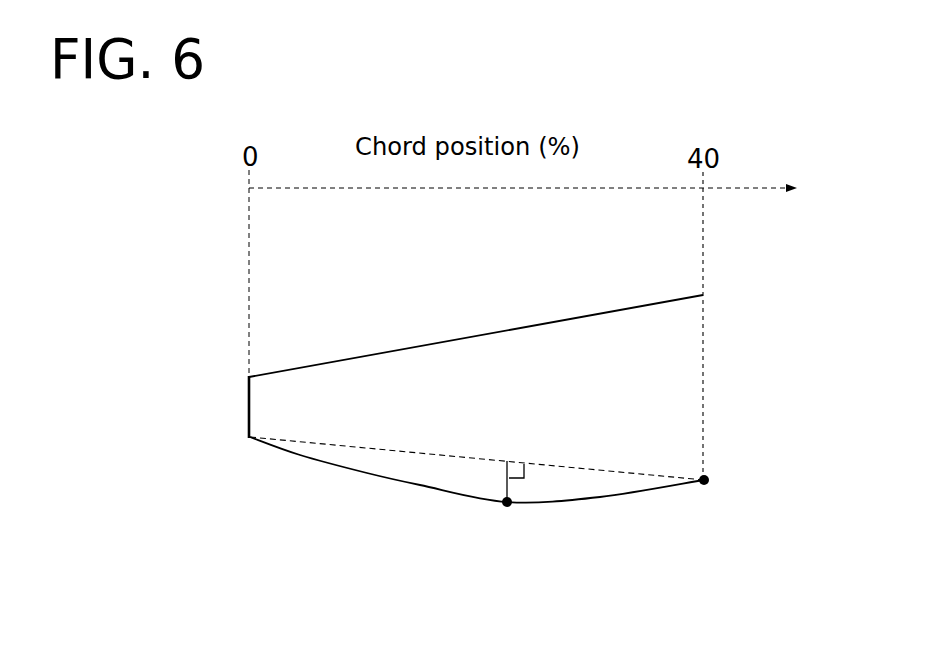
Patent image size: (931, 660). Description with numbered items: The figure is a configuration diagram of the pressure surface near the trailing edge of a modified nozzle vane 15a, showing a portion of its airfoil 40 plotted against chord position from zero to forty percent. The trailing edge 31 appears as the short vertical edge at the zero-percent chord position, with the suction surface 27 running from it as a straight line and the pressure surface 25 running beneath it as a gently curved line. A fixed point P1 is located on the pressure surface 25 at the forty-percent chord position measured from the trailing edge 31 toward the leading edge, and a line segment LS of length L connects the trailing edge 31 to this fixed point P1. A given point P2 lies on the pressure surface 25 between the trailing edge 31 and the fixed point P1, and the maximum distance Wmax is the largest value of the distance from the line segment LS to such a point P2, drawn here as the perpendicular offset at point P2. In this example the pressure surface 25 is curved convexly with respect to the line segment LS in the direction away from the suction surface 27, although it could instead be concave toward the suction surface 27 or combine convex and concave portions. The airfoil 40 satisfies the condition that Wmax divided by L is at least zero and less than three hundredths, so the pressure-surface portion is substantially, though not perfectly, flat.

The blade section 15a is at (749, 354).
The suction surface 27 is at (597, 309).
The pressure surface 25 is at (367, 475).
The trailing edge 31 is at (247, 410).
The airfoil 40 is at (685, 331).
The line segment LS is at (461, 453).
The maximum distance Wmax is at (510, 487).
The fixed point P1 is at (710, 479).
The given point P2 is at (507, 508).